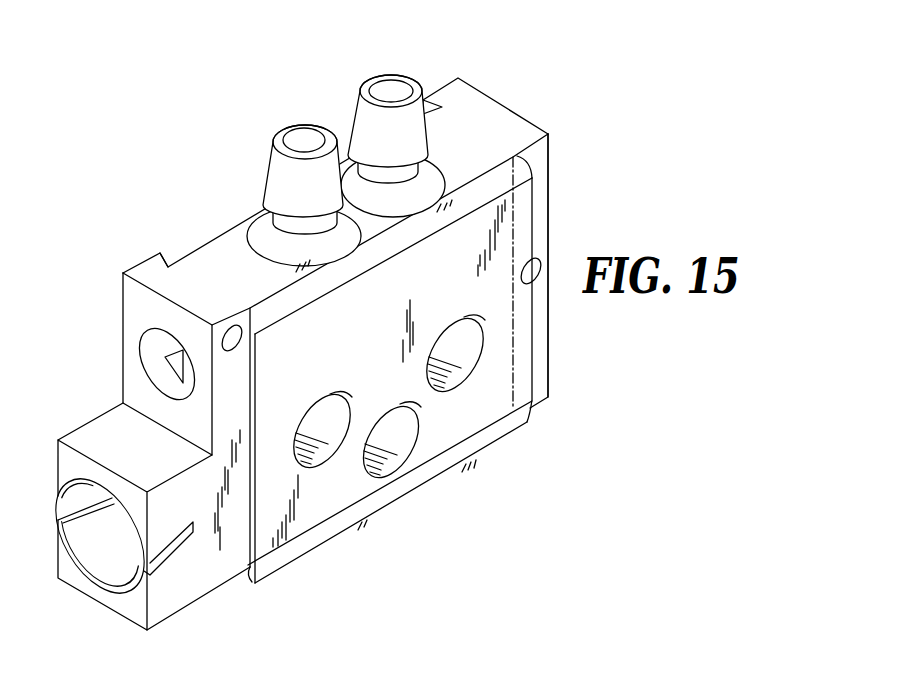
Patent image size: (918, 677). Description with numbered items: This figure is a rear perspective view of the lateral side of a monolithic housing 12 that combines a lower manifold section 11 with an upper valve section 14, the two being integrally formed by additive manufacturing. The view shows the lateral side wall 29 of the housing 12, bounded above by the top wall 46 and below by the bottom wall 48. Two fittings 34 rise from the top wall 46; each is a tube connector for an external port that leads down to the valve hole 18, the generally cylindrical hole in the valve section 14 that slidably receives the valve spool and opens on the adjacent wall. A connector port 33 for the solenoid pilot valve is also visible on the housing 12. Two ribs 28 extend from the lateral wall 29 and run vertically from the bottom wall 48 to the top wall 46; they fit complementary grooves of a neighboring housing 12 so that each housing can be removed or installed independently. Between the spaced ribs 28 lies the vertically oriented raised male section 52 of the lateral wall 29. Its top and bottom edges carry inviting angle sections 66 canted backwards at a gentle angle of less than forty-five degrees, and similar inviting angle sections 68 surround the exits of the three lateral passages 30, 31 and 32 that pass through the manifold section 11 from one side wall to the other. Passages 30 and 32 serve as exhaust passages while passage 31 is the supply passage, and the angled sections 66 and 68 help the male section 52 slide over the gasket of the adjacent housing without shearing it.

The housing 12 is at (584, 84).
The valve section 14 is at (515, 132).
The top wall 46 is at (480, 143).
The lateral side wall 29 is at (551, 204).
The fitting 34 is at (357, 112).
The raised male section 52 is at (430, 285).
The manifold section 11 is at (484, 421).
The inviting angle section 66 is at (329, 288).
The bottom wall 48 is at (378, 490).
The rib 28 is at (258, 566).
The lateral passage 32 is at (323, 466).
The lateral passage 31 is at (418, 445).
The lateral passage 30 is at (456, 357).
The inviting angle section 68 is at (480, 330).
The valve hole 18 is at (157, 343).
The connector port 33 is at (182, 542).